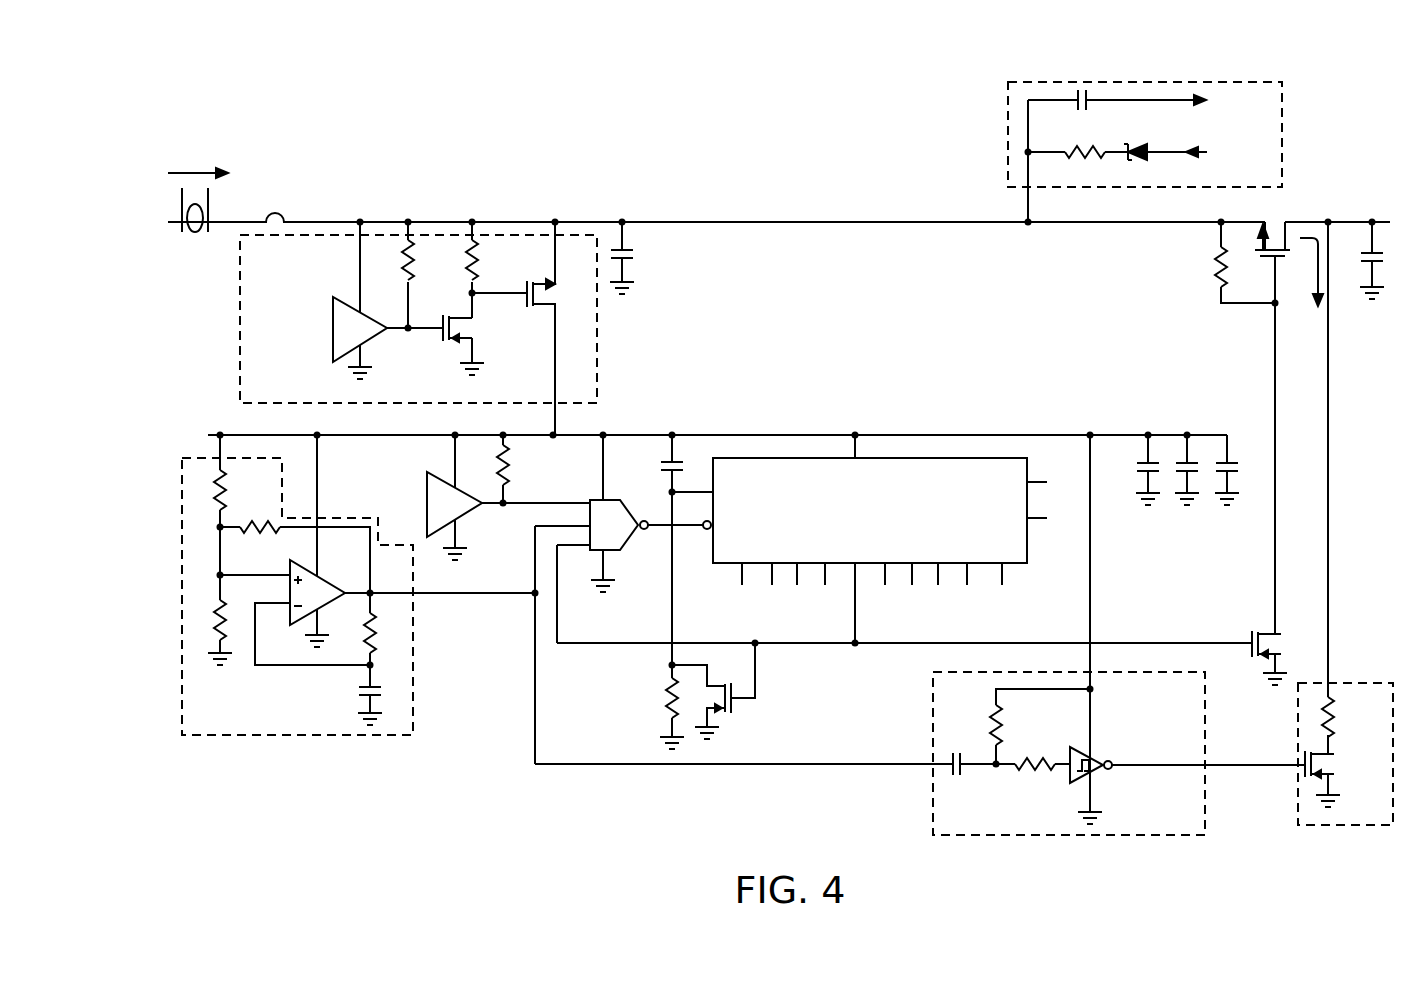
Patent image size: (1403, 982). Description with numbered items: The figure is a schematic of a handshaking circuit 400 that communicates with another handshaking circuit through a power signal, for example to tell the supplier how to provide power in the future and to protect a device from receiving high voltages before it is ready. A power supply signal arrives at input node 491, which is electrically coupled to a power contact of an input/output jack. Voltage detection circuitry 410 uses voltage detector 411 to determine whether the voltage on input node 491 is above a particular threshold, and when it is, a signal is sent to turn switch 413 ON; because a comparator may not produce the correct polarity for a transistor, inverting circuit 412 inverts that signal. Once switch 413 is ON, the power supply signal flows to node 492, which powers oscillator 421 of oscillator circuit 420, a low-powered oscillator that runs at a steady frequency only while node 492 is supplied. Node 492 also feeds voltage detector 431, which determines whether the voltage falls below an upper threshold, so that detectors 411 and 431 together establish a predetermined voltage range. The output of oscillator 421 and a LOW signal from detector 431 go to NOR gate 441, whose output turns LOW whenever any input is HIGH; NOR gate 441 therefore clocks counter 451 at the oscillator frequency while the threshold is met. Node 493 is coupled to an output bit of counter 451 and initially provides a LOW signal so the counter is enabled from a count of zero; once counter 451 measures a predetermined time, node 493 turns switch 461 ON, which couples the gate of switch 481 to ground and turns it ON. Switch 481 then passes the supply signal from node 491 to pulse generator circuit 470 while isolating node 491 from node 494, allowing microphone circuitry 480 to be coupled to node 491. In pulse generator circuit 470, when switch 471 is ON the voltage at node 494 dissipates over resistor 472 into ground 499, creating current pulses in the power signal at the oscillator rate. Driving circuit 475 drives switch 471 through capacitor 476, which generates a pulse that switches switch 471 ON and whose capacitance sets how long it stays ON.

The handshaking circuit 400 is at (757, 108).
The voltage detection circuitry 410 is at (240, 337).
The voltage detector 411 is at (333, 300).
The inverting circuit 412 is at (443, 314).
The switch 413 is at (538, 283).
The oscillator circuit 420 is at (360, 585).
The oscillator 421 is at (295, 562).
The voltage detector 431 is at (427, 483).
The NOR gate 441 is at (598, 499).
The counter 451 is at (718, 566).
The switch 461 is at (1251, 633).
The pulse generator circuit 470 is at (1316, 724).
The switch 471 is at (1302, 757).
The resistor 472 is at (1335, 715).
The driving circuit 475 is at (920, 658).
The capacitor 476 is at (962, 752).
The microphone circuitry 480 is at (1008, 127).
The switch 481 is at (1258, 244).
The input node 491 is at (170, 226).
The node 492 is at (220, 435).
The node 493 is at (773, 641).
The node 494 is at (1372, 222).
The ground 499 is at (1340, 801).